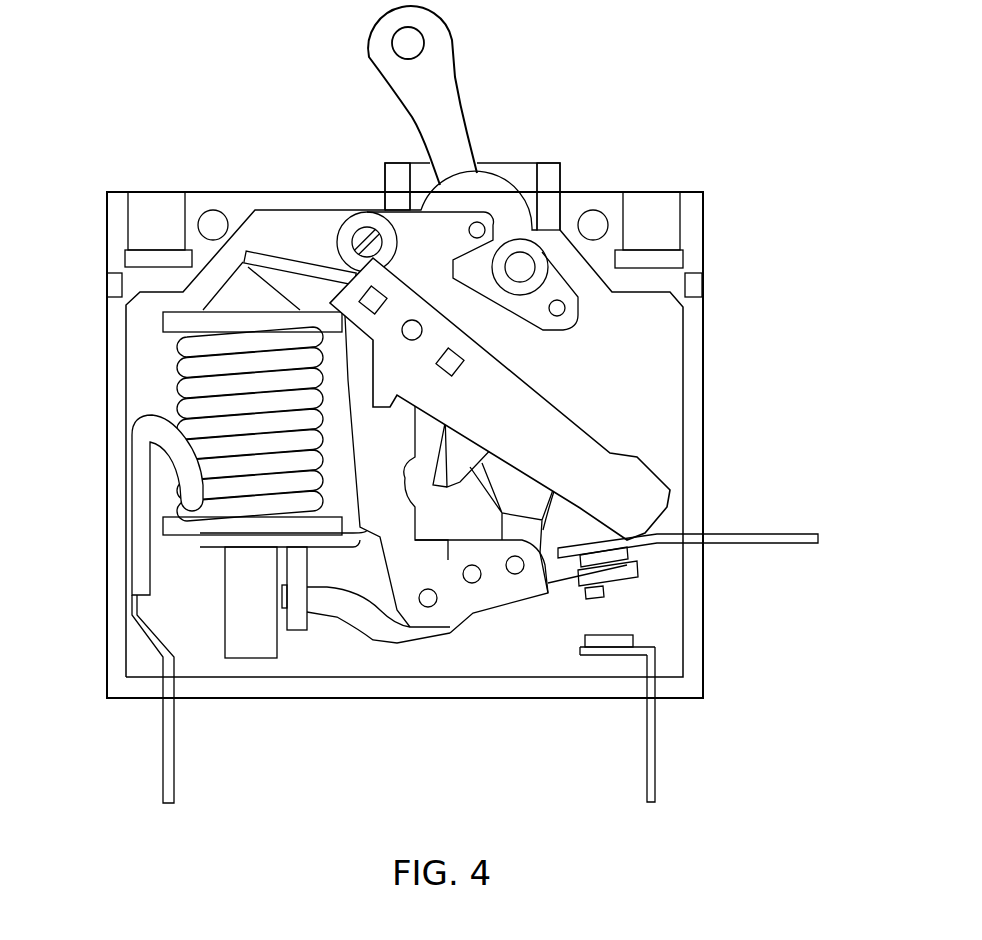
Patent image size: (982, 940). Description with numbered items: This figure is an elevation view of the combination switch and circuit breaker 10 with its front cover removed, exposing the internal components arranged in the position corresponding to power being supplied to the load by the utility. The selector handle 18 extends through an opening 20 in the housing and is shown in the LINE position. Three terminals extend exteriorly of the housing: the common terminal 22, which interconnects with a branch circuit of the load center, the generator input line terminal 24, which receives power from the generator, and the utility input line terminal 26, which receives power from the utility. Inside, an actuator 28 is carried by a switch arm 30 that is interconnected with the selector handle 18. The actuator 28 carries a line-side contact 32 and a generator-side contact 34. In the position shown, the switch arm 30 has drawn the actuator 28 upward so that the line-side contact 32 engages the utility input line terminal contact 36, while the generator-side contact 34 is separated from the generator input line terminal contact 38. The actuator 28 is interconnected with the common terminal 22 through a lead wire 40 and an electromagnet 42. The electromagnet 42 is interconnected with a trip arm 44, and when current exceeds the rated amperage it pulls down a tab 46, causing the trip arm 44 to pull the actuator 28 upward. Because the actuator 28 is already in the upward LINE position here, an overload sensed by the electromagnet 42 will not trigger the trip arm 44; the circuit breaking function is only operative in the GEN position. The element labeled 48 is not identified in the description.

The combination switch and circuit breaker 10 is at (753, 213).
The selector handle 18 is at (437, 88).
The opening 20 is at (547, 165).
The common terminal 22 is at (163, 777).
The generator input line terminal 24 is at (645, 780).
The utility input line terminal 26 is at (782, 545).
The actuator 28 is at (568, 587).
The switch arm 30 is at (527, 492).
The line-side contact 32 is at (635, 563).
The generator-side contact 34 is at (602, 590).
The utility input line terminal contact 36 is at (603, 558).
The generator input line terminal contact 38 is at (620, 632).
The lead wire 40 is at (368, 623).
The electromagnet 42 is at (177, 380).
The trip arm 44 is at (403, 300).
The tab 46 is at (280, 267).
The yoke 48 is at (242, 285).